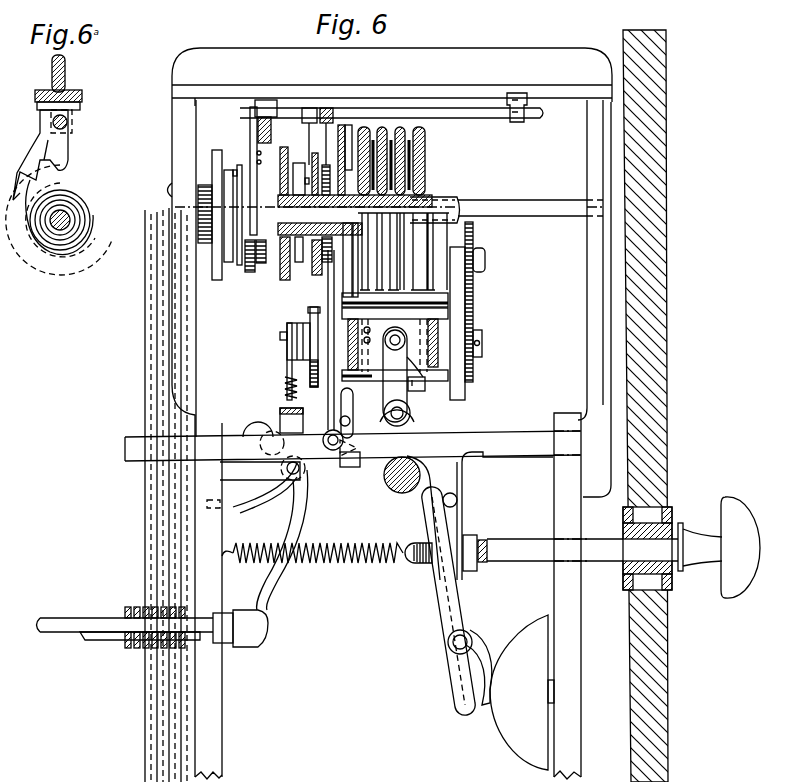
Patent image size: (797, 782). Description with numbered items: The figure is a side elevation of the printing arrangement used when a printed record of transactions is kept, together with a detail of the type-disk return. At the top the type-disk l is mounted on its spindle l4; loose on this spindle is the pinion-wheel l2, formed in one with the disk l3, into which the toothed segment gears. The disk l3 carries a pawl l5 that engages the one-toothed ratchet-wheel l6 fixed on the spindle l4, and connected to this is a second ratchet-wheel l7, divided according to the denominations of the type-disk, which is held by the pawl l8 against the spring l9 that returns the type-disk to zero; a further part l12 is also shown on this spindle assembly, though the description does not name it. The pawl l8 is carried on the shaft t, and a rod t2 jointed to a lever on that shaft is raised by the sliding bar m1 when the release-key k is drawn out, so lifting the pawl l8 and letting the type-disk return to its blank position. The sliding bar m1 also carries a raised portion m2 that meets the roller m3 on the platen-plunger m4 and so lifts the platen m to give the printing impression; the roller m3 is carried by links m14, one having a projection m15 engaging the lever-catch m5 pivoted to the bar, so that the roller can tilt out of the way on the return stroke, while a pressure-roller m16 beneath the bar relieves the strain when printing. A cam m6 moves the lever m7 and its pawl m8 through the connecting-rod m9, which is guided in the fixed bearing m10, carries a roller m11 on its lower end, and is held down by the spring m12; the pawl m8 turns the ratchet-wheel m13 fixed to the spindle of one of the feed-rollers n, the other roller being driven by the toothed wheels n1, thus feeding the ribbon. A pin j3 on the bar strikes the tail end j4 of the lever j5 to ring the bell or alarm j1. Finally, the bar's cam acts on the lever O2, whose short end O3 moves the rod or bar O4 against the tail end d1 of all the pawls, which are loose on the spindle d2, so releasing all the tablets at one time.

In FIG. 6A, the shaft t is at (68, 123).
In FIG. 6, the shaft t is at (455, 112).
In FIG. 6, the type-disk l is at (420, 152).
In FIG. 6, the pinion-wheel l2 is at (205, 185).
In FIG. 6, the disk l3 is at (283, 147).
In FIG. 6A, the spindle l4 is at (63, 220).
In FIG. 6, the spindle l4 is at (331, 431).
In FIG. 6, the pawl l5 is at (298, 165).
In FIG. 6, the one-toothed ratchet-wheel l6 is at (257, 428).
In FIG. 6A, the ratchet-wheel l7 is at (12, 193).
In FIG. 6, the ratchet-wheel l7 is at (315, 276).
In FIG. 6A, the pawl l8 is at (40, 133).
In FIG. 6, the pawl l8 is at (250, 112).
In FIG. 6A, the spring l9 is at (73, 190).
In FIG. 6, the spring l9 is at (259, 264).
In FIG. 6, the plate l12 is at (342, 165).
In FIG. 6, the feed-rollers n is at (395, 260).
In FIG. 6, the toothed wheels n1 is at (475, 371).
In FIG. 6, the platen m is at (395, 343).
In FIG. 6, the sliding bar m1 is at (505, 508).
In FIG. 6, the raised portion m2 is at (352, 426).
In FIG. 6, the roller m3 is at (411, 414).
In FIG. 6, the platen-plunger m4 is at (420, 391).
In FIG. 6, the lever-catch m5 is at (350, 458).
In FIG. 6, the cam m6 is at (280, 463).
In FIG. 6, the lever m7 is at (300, 345).
In FIG. 6, the pawl m8 is at (310, 312).
In FIG. 6, the connecting-rod m9 is at (288, 363).
In FIG. 6, the fixed bearing m10 is at (292, 420).
In FIG. 6, the roller m11 is at (293, 481).
In FIG. 6, the spring m12 is at (285, 385).
In FIG. 6, the ratchet-wheel m13 is at (314, 388).
In FIG. 6, the links m14 is at (403, 374).
In FIG. 6, the projection m15 is at (382, 462).
In FIG. 6, the pressure-roller m16 is at (402, 475).
In FIG. 6, the bell or alarm j1 is at (522, 692).
In FIG. 6, the pin j3 is at (457, 501).
In FIG. 6, the tail end j4 is at (436, 512).
In FIG. 6, the lever j5 is at (452, 641).
In FIG. 6, the release-key or pull knob k is at (728, 497).
In FIG. 6, the lever O2 is at (304, 514).
In FIG. 6, the short end of lever O3 is at (240, 647).
In FIG. 6, the rod or bar O4 is at (66, 618).
In FIG. 6, the tail end of pawls d1 is at (124, 646).
In FIG. 6, the spindle d2 is at (87, 641).
In FIG. 6, the rod t2 is at (353, 405).